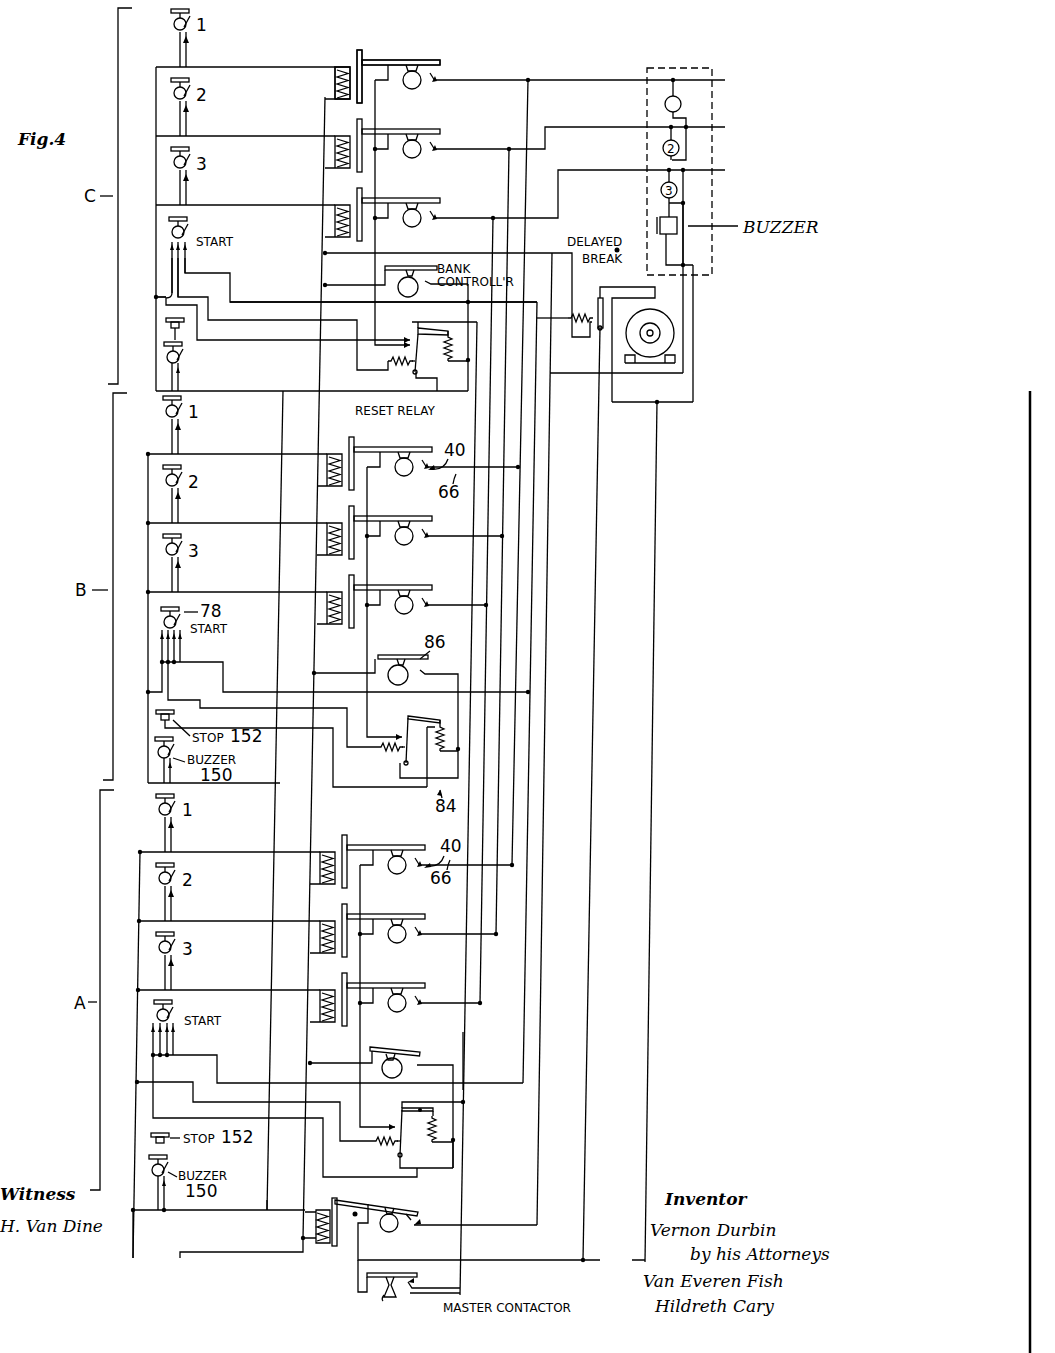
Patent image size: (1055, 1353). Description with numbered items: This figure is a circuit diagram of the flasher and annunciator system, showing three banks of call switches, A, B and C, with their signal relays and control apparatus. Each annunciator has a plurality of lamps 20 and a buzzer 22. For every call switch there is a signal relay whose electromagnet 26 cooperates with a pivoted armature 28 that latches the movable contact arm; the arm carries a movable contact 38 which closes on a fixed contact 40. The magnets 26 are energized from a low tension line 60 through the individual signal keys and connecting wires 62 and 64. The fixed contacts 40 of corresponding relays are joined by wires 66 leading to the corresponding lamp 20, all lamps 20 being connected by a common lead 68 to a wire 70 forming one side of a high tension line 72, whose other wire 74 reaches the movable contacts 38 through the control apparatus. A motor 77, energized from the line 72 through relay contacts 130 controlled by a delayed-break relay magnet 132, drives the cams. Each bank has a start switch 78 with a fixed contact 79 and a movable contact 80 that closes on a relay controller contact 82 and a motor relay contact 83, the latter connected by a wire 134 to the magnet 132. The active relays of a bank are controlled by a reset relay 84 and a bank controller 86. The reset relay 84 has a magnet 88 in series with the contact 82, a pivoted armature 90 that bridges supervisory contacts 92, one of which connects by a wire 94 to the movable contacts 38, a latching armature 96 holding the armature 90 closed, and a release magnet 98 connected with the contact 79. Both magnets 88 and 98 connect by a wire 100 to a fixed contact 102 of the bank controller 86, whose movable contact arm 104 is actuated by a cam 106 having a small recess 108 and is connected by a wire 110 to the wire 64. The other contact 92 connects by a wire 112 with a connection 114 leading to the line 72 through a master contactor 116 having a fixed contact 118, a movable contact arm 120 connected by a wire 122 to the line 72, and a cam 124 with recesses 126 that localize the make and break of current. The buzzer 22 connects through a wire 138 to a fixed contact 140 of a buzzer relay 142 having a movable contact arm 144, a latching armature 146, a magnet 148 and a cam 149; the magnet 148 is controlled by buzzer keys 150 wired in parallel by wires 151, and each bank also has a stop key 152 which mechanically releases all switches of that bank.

The lamp 20 is at (665, 104).
The buzzer 22 is at (659, 220).
The electromagnet 26 is at (338, 65).
The pivoted armature 28 is at (360, 50).
The movable contact 38 is at (430, 60).
The fixed contact 40 is at (440, 80).
The low tension line 60 is at (178, 1260).
The connecting wire 62 is at (243, 67).
The connecting wire 64 is at (324, 112).
The wire 66 is at (545, 79).
The common lead 68 is at (686, 193).
The wire 70 is at (687, 406).
The high tension line 72 is at (617, 1260).
The line wire 74 is at (586, 1066).
The motor 77 is at (650, 336).
The start switch 78 is at (187, 225).
The fixed contact 79 is at (166, 268).
The movable contact 80 is at (170, 245).
The relay controller contact 82 is at (180, 260).
The motor relay contact 83 is at (187, 268).
The reset relay 84 is at (447, 395).
The bank controller 86 is at (428, 291).
The magnet 88 is at (390, 754).
The pivoted armature 90 is at (413, 766).
The supervisory contacts 92 is at (404, 733).
The wire 94 is at (378, 655).
The latching armature 96 is at (446, 706).
The release magnet 98 is at (436, 1132).
The wire 100 is at (452, 1166).
The fixed contact 102 is at (417, 1066).
The movable contact arm 104 is at (413, 1050).
The cam 106 is at (402, 1072).
The recess 108 is at (389, 1055).
The wire 110 is at (340, 1051).
The wire 112 is at (419, 711).
The connection 114 is at (466, 1033).
The master contactor 116 is at (342, 1288).
The fixed contact 118 is at (413, 1290).
The movable contact arm 120 is at (410, 1274).
The wire 122 is at (397, 1258).
The cam 124 is at (395, 1296).
The recesses 126 is at (381, 1293).
The relay contacts 130 is at (622, 279).
The relay magnet 132 is at (565, 307).
The wire 134 is at (273, 302).
The wire 138 is at (550, 482).
The fixed contact 140 is at (418, 1222).
The buzzer relay 142 is at (412, 1202).
The movable contact arm 144 is at (380, 1198).
The latching armature 146 is at (334, 1199).
The magnet 148 is at (324, 1244).
The cam 149 is at (382, 1230).
The buzzer key 150 is at (183, 362).
The wires 151 is at (276, 836).
The stop key 152 is at (182, 328).